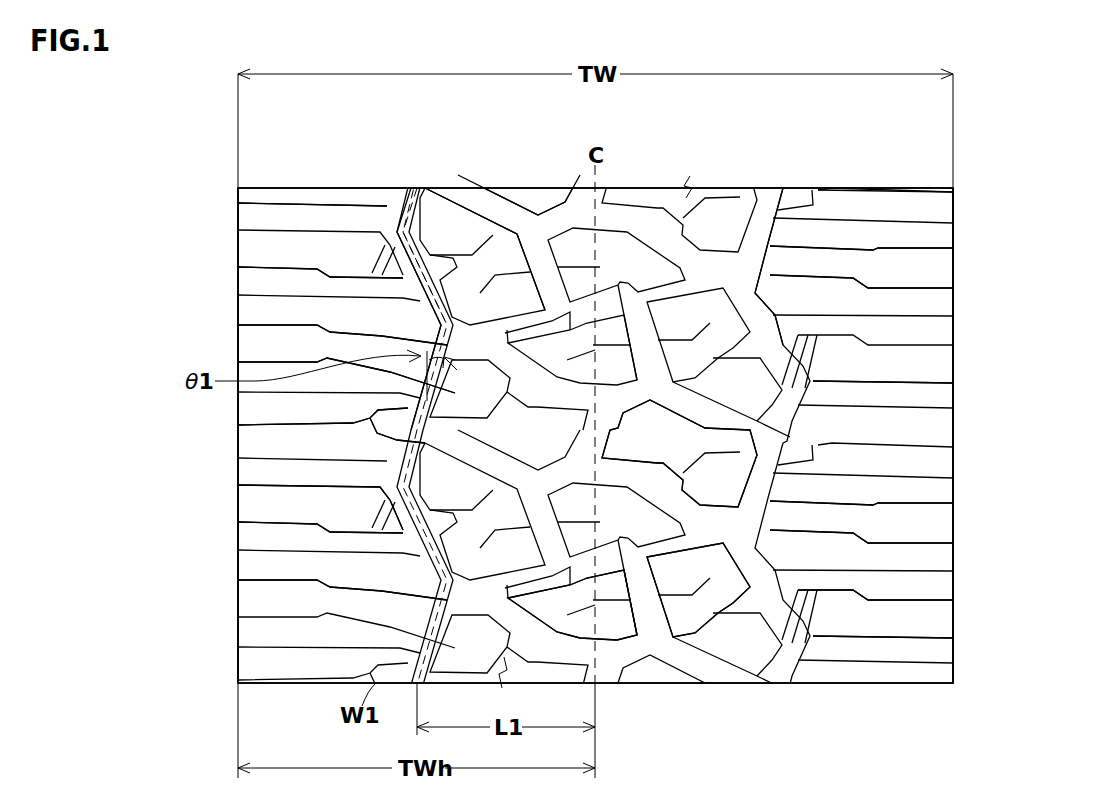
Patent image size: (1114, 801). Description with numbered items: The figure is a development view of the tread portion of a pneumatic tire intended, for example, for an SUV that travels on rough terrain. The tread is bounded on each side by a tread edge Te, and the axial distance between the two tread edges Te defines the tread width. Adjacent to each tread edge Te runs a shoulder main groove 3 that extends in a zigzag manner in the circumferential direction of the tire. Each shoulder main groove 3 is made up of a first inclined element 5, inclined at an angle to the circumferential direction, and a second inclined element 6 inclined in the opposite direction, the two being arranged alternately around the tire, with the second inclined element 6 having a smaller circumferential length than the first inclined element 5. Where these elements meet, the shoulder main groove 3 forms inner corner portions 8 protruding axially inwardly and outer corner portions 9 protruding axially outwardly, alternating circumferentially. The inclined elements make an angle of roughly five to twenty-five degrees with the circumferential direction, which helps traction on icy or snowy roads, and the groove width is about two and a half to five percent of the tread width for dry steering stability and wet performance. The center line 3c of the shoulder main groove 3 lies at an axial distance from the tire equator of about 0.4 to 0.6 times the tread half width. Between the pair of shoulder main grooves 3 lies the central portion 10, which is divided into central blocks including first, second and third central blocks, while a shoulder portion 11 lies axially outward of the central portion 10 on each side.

The shoulder main groove 3 is at (403, 200).
The center line of the shoulder main groove 3c is at (422, 275).
The first inclined element 5 is at (412, 421).
The second inclined element 6 is at (416, 277).
The inner corner portion 8 is at (438, 334).
The outer corner portion 9 is at (387, 477).
The central portion 10 is at (572, 250).
The shoulder portion 11 is at (323, 252).
The tread edge Te is at (238, 243).